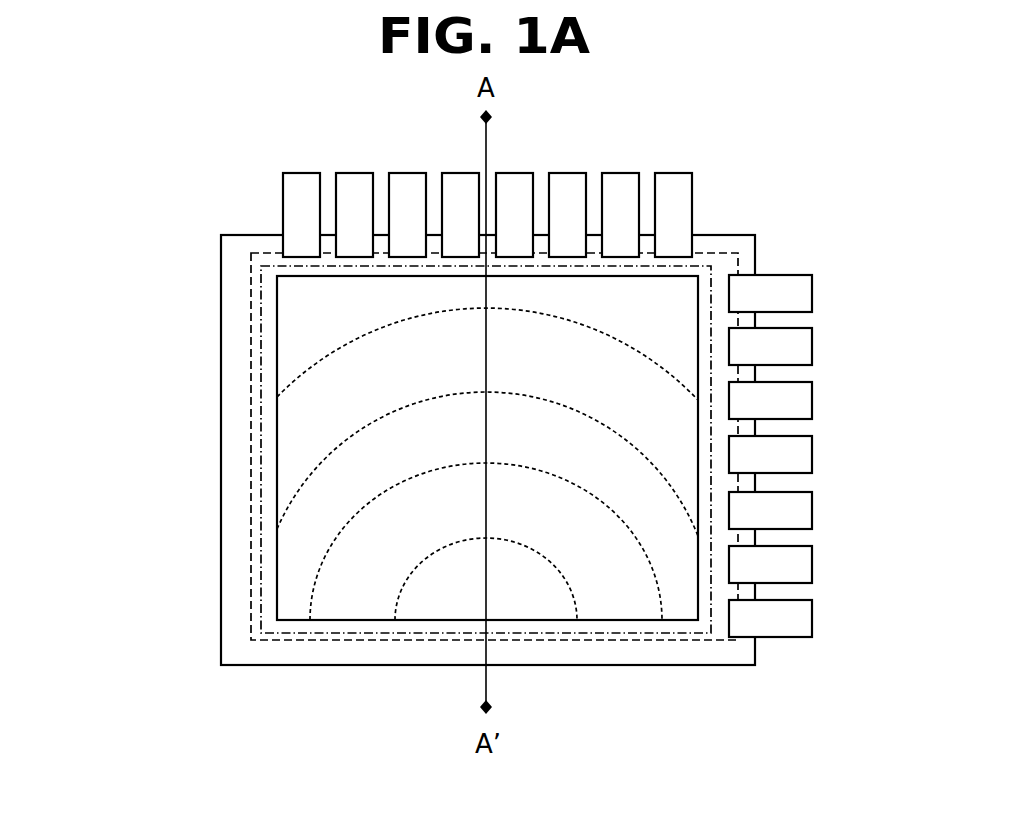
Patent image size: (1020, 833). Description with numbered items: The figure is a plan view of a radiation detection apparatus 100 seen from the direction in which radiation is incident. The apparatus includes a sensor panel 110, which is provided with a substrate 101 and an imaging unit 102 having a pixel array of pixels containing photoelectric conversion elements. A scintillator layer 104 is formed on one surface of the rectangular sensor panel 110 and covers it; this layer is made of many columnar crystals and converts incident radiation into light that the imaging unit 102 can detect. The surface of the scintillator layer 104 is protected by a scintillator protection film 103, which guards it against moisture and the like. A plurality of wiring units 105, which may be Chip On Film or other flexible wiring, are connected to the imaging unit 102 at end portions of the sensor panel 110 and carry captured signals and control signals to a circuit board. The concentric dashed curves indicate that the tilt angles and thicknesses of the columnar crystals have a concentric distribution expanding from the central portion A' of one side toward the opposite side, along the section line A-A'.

The radiation detection apparatus 100 is at (240, 195).
The sensor panel 110 is at (130, 240).
The substrate 101 is at (221, 258).
The imaging unit 102 is at (251, 313).
The scintillator protection film 103 is at (261, 380).
The scintillator layer 104 is at (300, 440).
The wiring unit 105 is at (272, 165).